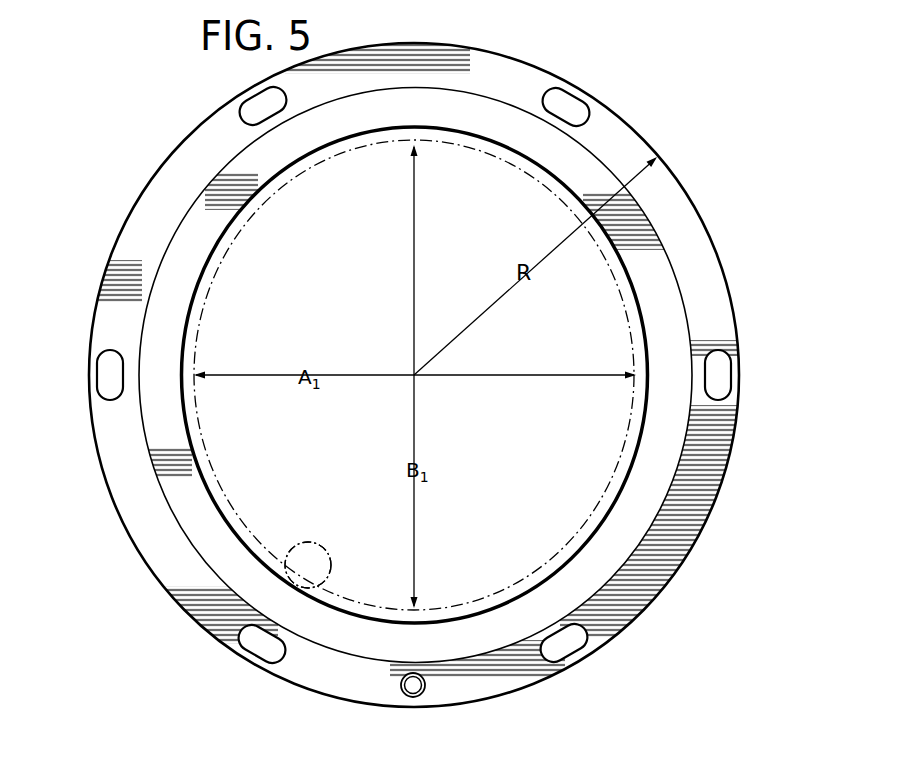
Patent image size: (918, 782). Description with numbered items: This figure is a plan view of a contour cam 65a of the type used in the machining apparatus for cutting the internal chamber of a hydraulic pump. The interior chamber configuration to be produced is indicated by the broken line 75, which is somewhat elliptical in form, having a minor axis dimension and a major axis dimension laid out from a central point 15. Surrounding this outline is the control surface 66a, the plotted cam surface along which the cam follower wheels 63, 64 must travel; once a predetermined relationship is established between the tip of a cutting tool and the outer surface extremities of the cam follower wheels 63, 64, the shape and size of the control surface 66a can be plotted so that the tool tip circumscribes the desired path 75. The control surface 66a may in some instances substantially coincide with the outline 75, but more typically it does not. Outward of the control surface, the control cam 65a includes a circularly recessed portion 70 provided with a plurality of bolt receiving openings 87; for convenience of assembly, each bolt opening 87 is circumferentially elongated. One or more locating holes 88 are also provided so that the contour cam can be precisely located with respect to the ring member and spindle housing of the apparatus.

The center of seal ring 15 is at (416, 377).
The cam follower wheel 63 is at (297, 544).
The cam follower wheel 64 is at (308, 565).
The contour cam 65a is at (392, 361).
The control surface 66a is at (624, 270).
The circularly recessed portion 70 is at (723, 320).
The broken line outline 75 is at (232, 250).
The bolt receiving opening 87 is at (262, 98).
The locating hole 88 is at (401, 685).